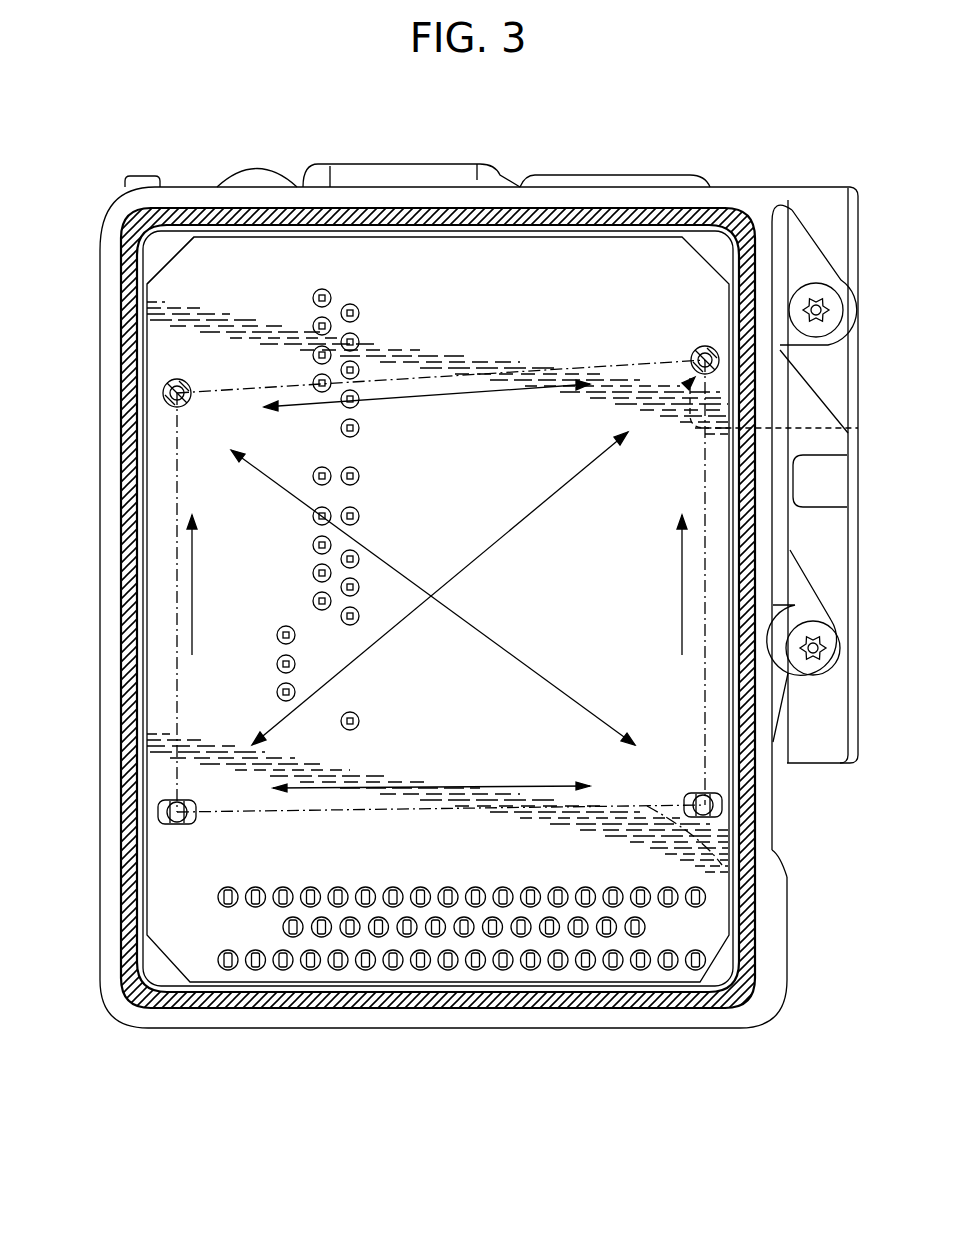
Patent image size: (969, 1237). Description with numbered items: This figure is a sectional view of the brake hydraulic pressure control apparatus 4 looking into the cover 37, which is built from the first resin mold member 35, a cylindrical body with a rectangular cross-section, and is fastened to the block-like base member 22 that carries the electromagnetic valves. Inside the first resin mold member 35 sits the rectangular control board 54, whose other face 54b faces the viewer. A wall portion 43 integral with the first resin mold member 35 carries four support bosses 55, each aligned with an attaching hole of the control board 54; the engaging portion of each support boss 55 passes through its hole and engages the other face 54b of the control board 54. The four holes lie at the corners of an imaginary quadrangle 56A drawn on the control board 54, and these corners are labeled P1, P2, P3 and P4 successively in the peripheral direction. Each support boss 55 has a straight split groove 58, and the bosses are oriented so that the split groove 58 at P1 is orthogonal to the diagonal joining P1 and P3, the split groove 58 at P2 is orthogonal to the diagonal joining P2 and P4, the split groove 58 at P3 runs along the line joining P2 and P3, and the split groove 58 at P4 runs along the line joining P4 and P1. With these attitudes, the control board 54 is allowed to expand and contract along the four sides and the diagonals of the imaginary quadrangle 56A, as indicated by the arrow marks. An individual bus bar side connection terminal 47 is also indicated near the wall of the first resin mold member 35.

The base member 22 is at (830, 522).
The first resin mold member 35 is at (108, 590).
The cover 37 is at (90, 693).
The wall portion 43 is at (714, 976).
The individual bus bar side connection terminal 47 is at (858, 432).
The control board 54 is at (567, 283).
The other face of the control board 54b is at (178, 263).
The support boss 55 is at (707, 333).
The imaginary quadrangle 56A is at (772, 852).
The split groove 58 is at (170, 400).
The brake hydraulic pressure control apparatus 4 is at (257, 777).
The corner position P1 is at (680, 567).
The corner position P2 is at (433, 368).
The corner position P3 is at (200, 602).
The corner position P4 is at (440, 786).